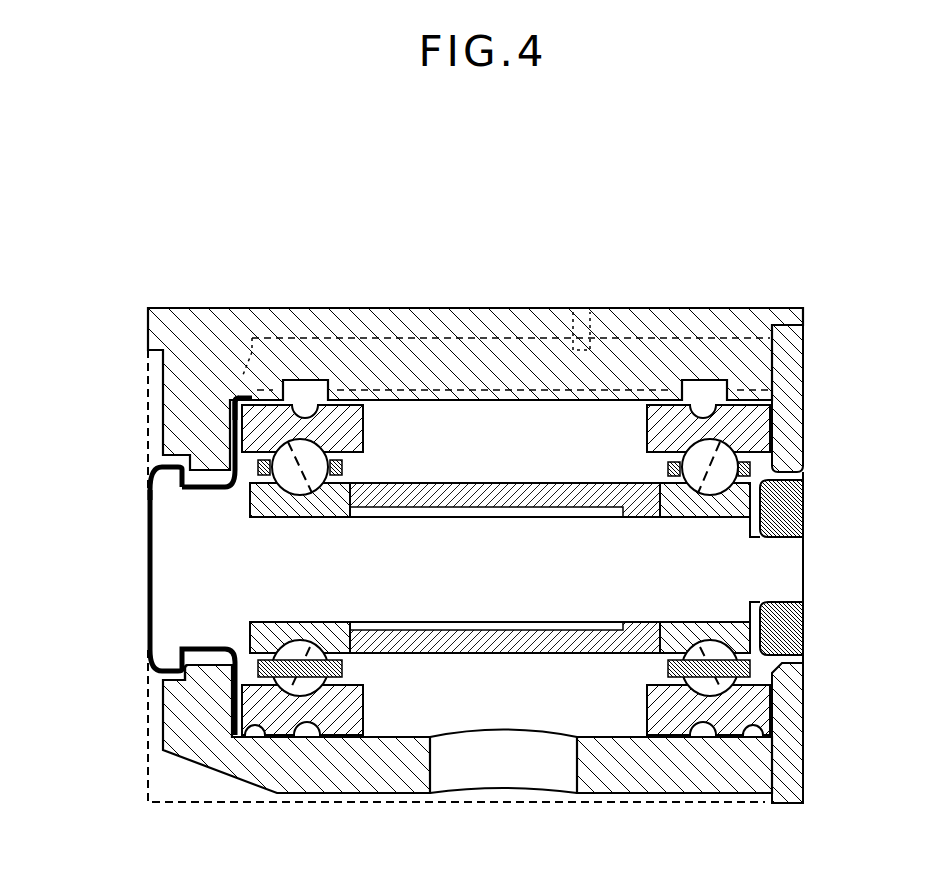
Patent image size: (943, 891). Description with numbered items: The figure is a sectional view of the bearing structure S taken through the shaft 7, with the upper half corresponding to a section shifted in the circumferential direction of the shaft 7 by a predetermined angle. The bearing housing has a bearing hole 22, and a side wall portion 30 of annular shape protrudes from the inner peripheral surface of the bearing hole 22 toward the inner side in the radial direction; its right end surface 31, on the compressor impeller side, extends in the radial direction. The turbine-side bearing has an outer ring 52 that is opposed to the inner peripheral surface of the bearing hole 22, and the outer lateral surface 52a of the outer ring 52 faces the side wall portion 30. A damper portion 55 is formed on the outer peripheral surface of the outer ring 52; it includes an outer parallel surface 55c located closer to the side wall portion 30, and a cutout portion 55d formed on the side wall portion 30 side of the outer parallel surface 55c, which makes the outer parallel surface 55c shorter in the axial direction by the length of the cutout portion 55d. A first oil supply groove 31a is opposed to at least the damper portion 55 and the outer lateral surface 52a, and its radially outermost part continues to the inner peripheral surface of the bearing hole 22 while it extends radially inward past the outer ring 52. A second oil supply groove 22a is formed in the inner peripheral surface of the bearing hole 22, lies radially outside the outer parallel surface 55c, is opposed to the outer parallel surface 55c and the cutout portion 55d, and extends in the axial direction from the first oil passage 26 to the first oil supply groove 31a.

The bearing structure S is at (100, 215).
The shaft 7 is at (497, 582).
The bearing hole 22 is at (490, 452).
The second oil supply groove 22a is at (240, 408).
The first oil passage 26 is at (327, 380).
The side wall portion 30 is at (213, 477).
The right end surface 31 is at (240, 655).
The first oil supply groove 31a is at (237, 492).
The outer ring 52 is at (363, 720).
The outer lateral surface 52a is at (242, 707).
The damper portion 55 is at (357, 400).
The outer parallel surface 55c is at (273, 400).
The cutout portion 55d is at (257, 392).